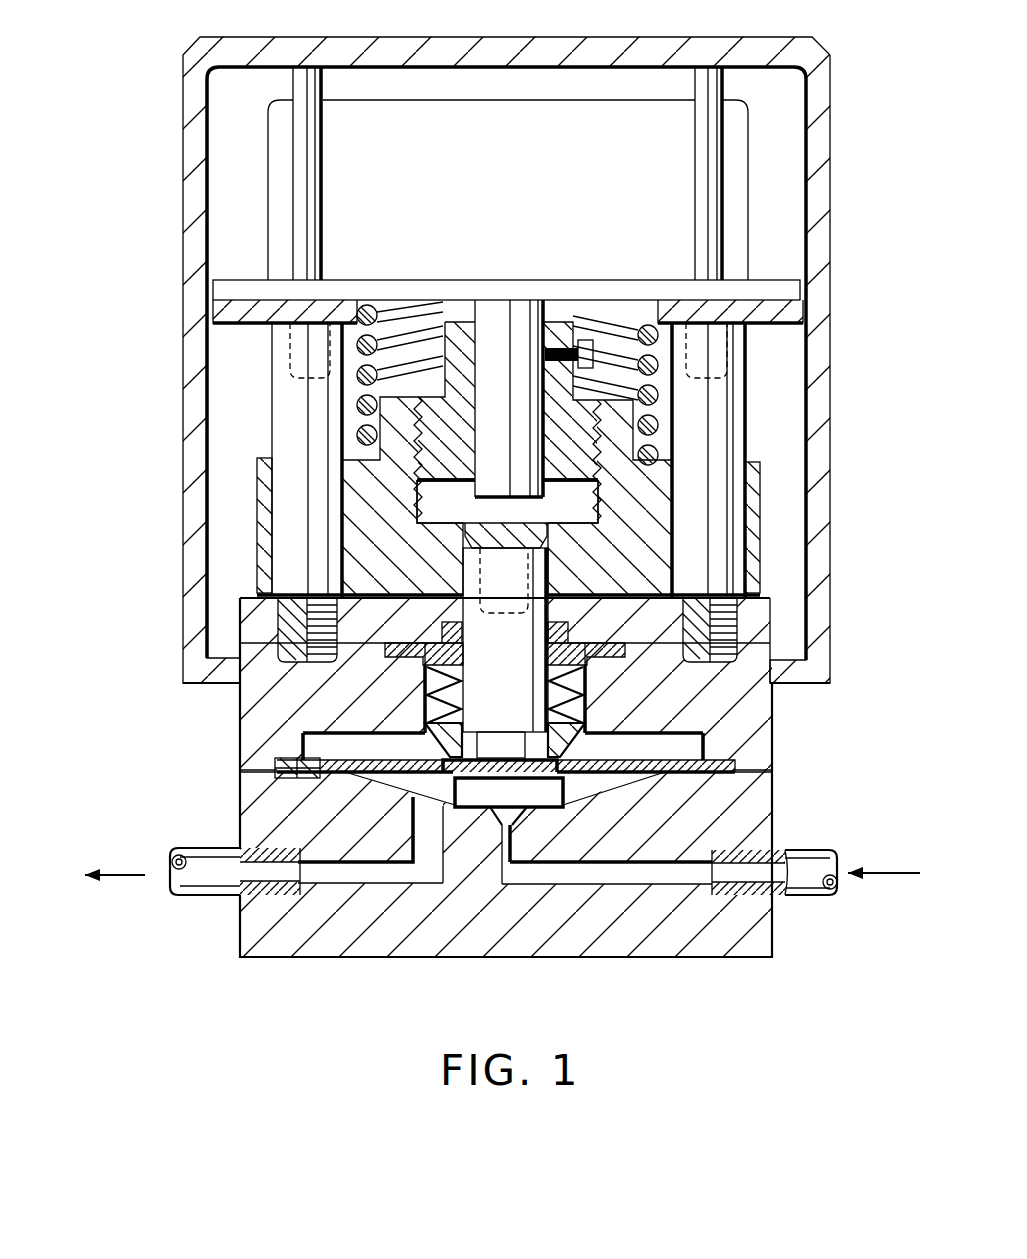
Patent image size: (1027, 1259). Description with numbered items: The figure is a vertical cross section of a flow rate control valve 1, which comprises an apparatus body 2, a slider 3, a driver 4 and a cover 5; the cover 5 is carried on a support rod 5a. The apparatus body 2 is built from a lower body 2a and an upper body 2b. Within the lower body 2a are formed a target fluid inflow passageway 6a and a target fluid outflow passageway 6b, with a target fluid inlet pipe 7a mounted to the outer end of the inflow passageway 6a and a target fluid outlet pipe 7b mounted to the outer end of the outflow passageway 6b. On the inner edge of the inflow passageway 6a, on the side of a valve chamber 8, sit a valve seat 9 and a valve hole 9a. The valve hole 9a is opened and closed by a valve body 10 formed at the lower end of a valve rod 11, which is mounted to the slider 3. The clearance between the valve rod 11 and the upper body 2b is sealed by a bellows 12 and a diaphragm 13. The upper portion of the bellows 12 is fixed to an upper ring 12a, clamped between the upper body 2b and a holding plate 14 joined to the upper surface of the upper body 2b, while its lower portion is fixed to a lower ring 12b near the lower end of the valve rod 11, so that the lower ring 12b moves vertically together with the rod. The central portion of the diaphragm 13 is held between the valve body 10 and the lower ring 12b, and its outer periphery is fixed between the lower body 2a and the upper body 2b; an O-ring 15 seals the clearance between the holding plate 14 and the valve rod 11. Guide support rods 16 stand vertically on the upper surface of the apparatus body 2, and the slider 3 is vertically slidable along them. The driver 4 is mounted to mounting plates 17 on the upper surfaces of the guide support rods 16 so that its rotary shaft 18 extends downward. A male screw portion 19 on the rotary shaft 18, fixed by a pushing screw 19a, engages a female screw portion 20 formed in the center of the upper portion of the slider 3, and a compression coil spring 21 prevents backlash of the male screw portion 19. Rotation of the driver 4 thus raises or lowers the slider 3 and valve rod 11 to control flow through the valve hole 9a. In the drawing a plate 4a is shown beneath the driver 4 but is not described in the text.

The flow rate control valve 1 is at (502, 508).
The apparatus body 2 is at (792, 745).
The lower body 2a is at (758, 822).
The upper body 2b is at (753, 753).
The slider 3 is at (753, 487).
The driver 4 is at (740, 145).
The support plate 4a is at (763, 288).
The cover 5 is at (818, 128).
The support rod 5a is at (277, 186).
The target fluid inflow passageway 6a is at (680, 878).
The target fluid outflow passageway 6b is at (385, 877).
The target fluid inlet pipe 7a is at (803, 890).
The target fluid outlet pipe 7b is at (188, 893).
The valve chamber 8 is at (400, 780).
The valve seat 9 is at (497, 822).
The valve hole 9a is at (513, 815).
The valve body 10 is at (520, 806).
The valve rod 11 is at (470, 568).
The bellows 12 is at (430, 745).
The upper ring 12a is at (620, 657).
The lower ring 12b is at (573, 737).
The diaphragm 13 is at (338, 762).
The holding plate 14 is at (758, 630).
The O-ring 15 is at (440, 631).
The guide support rods 16 is at (285, 392).
The mounting plates 17 is at (758, 323).
The rotary shaft 18 is at (545, 490).
The male screw portion 19 is at (433, 417).
The pushing screw 19a is at (594, 352).
The female screw portion 20 is at (423, 496).
The compression coil spring 21 is at (660, 425).